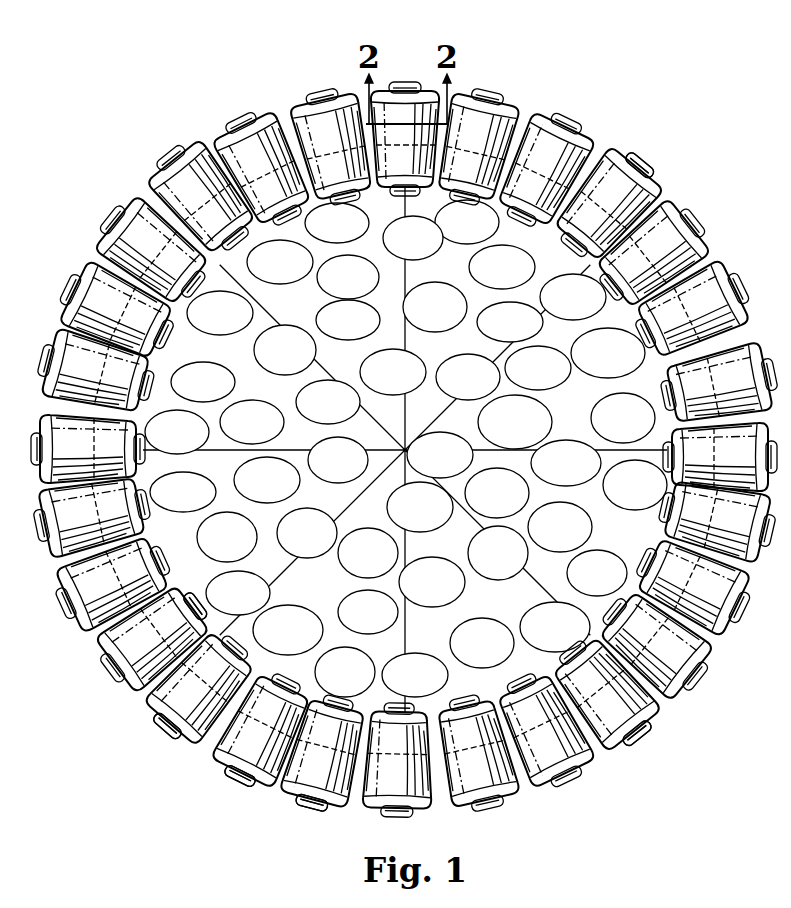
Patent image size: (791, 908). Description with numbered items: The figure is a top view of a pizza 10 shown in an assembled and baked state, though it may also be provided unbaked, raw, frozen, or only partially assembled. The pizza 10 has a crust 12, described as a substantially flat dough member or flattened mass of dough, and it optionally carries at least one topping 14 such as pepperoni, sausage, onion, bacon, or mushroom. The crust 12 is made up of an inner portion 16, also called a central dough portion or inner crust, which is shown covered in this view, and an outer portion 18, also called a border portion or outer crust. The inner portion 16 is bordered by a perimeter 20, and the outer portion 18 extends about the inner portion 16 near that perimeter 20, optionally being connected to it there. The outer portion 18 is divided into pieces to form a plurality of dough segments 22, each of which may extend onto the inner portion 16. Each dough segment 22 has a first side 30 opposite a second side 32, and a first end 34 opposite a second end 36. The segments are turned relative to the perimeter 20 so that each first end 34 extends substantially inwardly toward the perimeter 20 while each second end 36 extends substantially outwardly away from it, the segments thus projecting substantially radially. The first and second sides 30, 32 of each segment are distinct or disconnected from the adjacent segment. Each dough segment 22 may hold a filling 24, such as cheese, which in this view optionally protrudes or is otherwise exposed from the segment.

The pizza 10 is at (245, 60).
The crust 12 is at (257, 136).
The topping 14 is at (519, 228).
The inner portion 16 is at (646, 379).
The outer portion 18 is at (682, 218).
The perimeter 20 is at (627, 740).
The dough segments 22 is at (345, 808).
The filling 24 is at (644, 157).
The first side 30 is at (170, 703).
The second side 32 is at (93, 628).
The first end 34 is at (167, 594).
The second end 36 is at (102, 655).